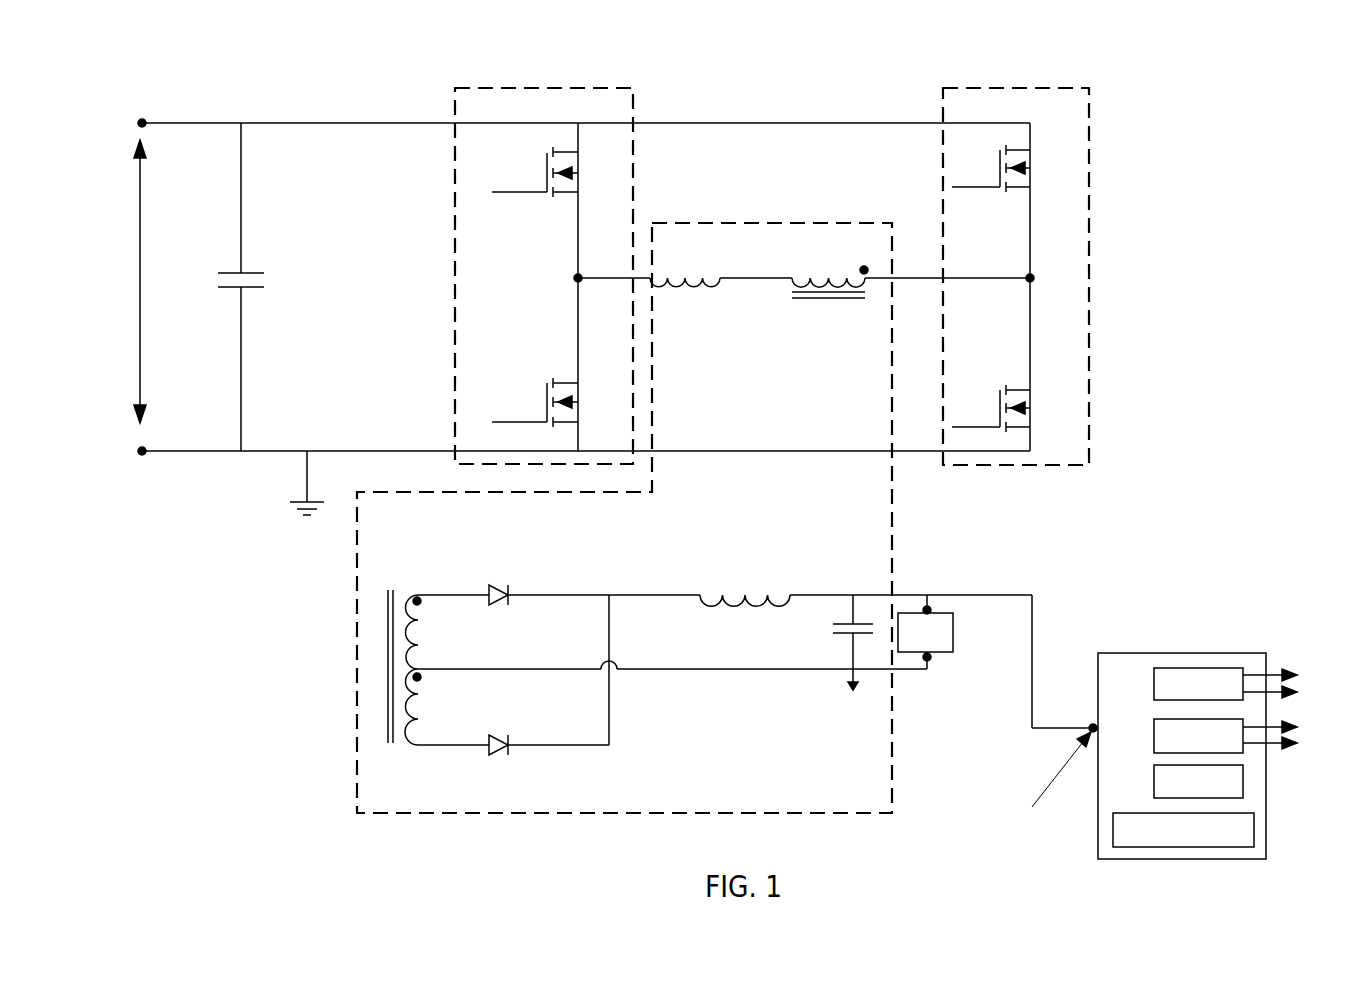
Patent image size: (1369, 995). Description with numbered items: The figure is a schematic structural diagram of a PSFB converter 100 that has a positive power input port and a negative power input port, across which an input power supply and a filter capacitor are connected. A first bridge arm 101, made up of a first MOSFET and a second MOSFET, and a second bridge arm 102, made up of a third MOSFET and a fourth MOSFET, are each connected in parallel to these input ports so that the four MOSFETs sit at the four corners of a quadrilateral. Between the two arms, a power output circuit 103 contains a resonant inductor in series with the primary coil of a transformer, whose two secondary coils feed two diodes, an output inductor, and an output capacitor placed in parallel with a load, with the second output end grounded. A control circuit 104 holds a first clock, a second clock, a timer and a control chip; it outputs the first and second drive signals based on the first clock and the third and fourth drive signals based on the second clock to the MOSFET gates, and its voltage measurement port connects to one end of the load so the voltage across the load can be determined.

The PSFB converter 100 is at (733, 444).
The first bridge arm 101 is at (542, 258).
The second bridge arm 102 is at (1015, 259).
The power output circuit 103 is at (727, 500).
The control circuit 104 is at (1151, 752).